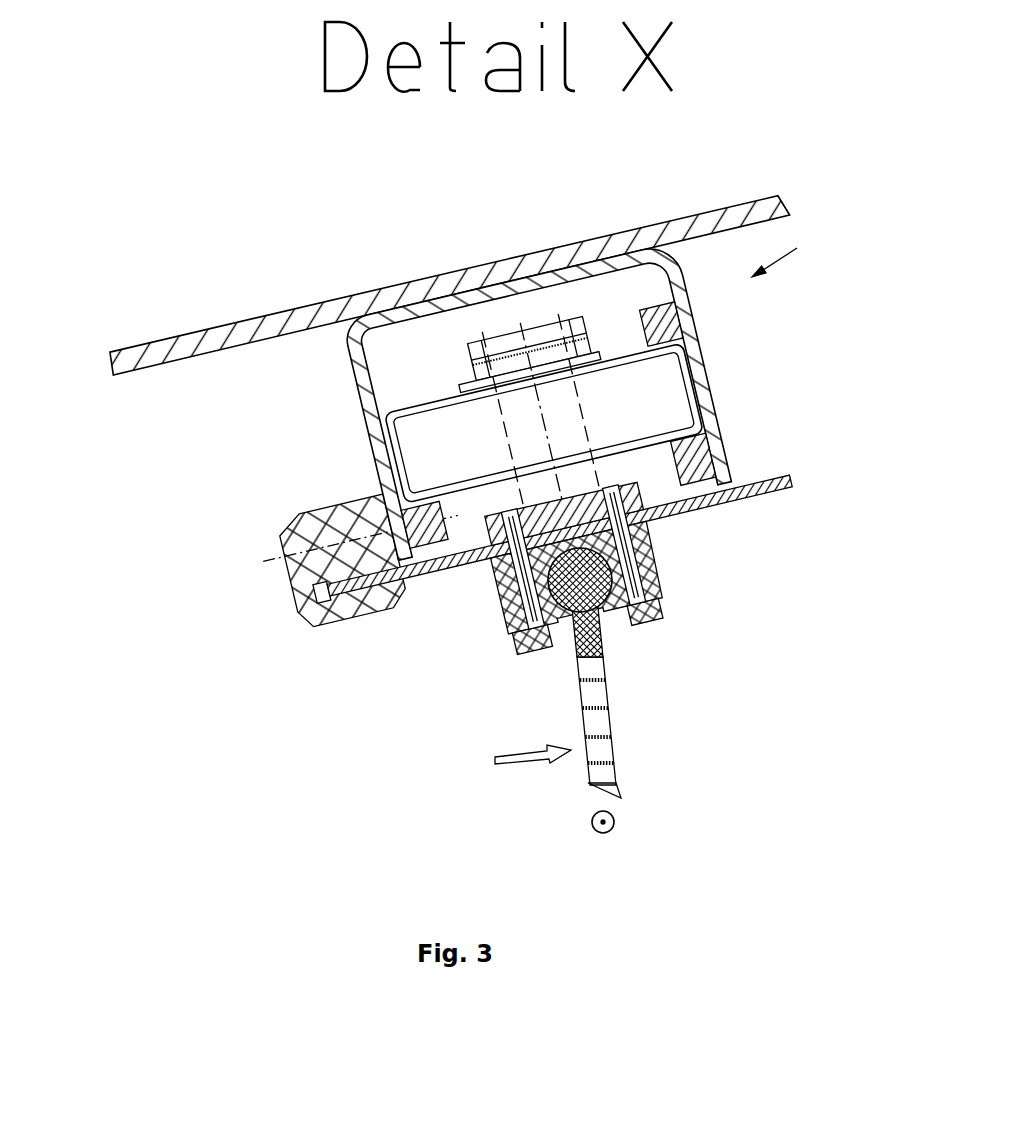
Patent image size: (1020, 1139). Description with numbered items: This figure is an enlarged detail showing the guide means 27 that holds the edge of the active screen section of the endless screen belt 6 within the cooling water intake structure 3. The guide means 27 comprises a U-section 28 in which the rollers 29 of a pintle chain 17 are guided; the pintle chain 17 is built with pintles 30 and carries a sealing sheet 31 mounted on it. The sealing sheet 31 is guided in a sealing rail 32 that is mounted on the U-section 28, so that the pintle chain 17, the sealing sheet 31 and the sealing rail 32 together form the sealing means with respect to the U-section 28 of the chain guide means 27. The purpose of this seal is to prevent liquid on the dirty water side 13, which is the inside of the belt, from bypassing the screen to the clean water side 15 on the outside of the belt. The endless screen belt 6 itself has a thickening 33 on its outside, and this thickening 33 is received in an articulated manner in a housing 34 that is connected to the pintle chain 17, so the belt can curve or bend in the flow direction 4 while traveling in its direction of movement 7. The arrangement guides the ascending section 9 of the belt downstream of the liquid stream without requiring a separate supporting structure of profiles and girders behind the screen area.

The cooling water intake structure 3 is at (202, 342).
The flow direction 4 is at (497, 762).
The endless screen belt 6 is at (605, 718).
The direction of movement 7 is at (613, 824).
The ascending section 9 is at (607, 775).
The dirty water side 13 is at (278, 732).
The clean water side 15 is at (834, 729).
The pintle chain 17 is at (598, 352).
The guide means 27 is at (796, 253).
The U-section 28 is at (697, 357).
The rollers 29 is at (673, 395).
The pintles 30 is at (503, 365).
The sealing sheet 31 is at (697, 505).
The sealing rail 32 is at (300, 527).
The thickening 33 is at (600, 620).
The housing 34 is at (660, 565).